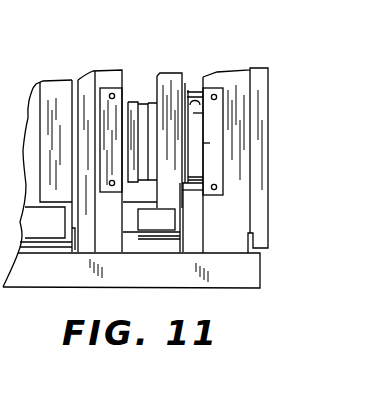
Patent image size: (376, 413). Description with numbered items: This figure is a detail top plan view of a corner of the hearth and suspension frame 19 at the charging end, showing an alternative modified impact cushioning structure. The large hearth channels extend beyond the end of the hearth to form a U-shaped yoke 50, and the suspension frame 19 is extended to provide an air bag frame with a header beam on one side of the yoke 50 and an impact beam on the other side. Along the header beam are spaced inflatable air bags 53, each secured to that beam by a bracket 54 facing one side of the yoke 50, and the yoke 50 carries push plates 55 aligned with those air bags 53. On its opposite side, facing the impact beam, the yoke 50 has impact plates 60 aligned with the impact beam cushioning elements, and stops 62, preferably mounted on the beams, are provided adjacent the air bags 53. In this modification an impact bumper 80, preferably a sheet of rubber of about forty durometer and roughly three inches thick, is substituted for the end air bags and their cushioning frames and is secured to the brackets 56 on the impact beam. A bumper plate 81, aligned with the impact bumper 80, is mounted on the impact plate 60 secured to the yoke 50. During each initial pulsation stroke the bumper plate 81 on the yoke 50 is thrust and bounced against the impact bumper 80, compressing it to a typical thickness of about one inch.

The suspension frame 19 is at (262, 267).
The U-shaped yoke 50 is at (193, 90).
The air bags 53 is at (193, 115).
The bracket 54 is at (208, 144).
The push plates 55 is at (190, 189).
The brackets 56 is at (128, 88).
The impact plates 60 is at (157, 74).
The stops 62 is at (204, 76).
The impact bumper 80 is at (139, 183).
The bumper plate 81 is at (148, 102).